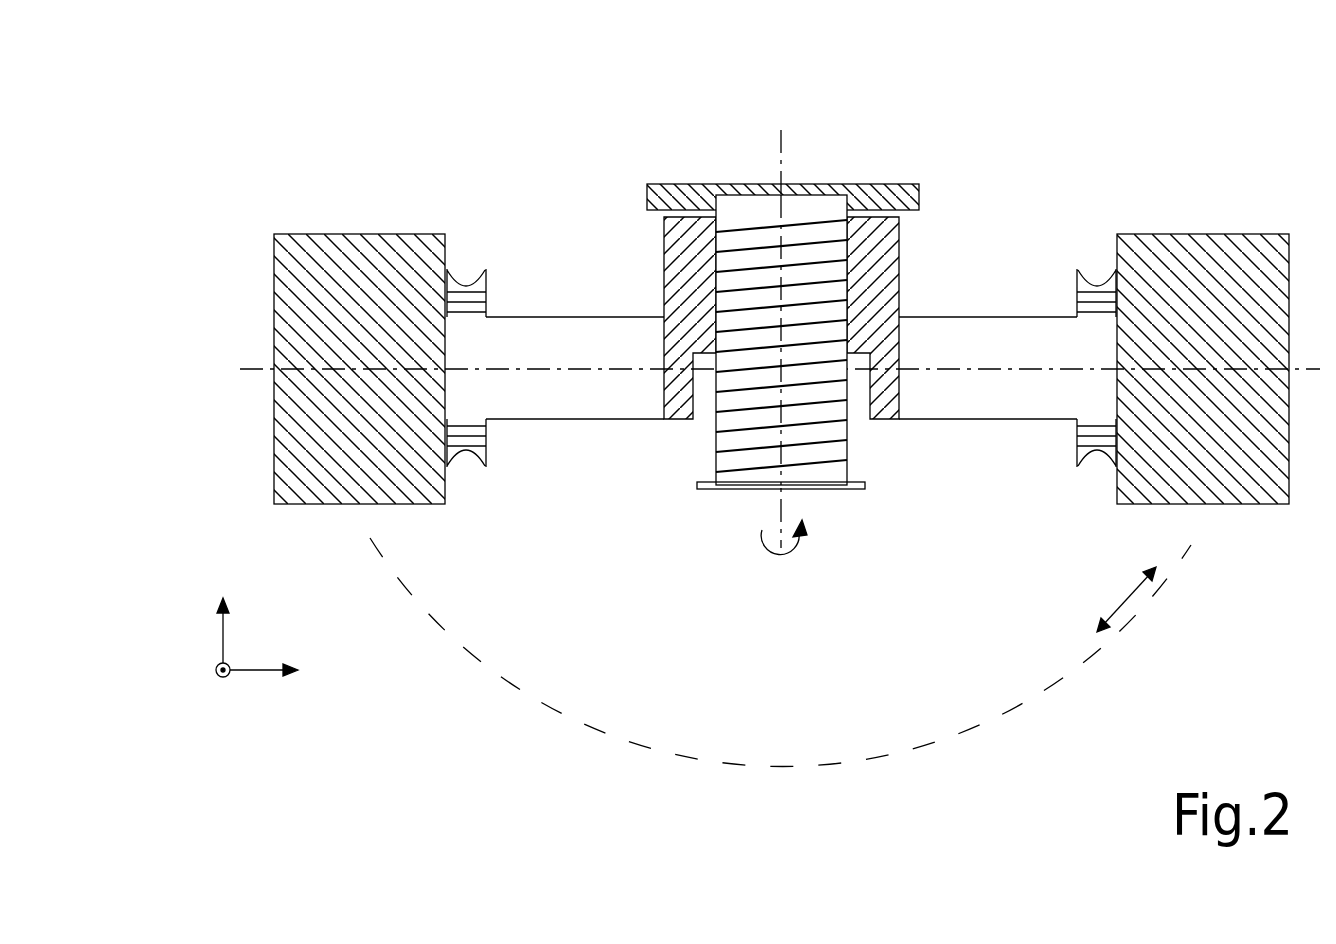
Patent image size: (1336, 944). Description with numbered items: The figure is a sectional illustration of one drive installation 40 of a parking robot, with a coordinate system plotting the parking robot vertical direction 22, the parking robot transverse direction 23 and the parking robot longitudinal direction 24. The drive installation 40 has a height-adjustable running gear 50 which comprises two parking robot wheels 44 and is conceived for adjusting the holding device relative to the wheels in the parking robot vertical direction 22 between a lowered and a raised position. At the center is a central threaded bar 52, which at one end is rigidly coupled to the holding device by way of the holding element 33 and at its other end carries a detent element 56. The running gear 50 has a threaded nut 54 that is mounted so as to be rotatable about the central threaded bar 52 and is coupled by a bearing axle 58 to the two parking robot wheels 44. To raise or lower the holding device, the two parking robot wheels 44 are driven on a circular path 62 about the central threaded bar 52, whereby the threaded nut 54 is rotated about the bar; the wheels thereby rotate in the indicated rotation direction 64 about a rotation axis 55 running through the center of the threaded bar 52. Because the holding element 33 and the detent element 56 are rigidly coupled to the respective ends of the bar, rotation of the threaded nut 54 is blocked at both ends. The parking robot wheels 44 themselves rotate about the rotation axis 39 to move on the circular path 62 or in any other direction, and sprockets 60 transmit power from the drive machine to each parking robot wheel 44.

The parking robot vertical direction 22 is at (222, 640).
The parking robot transverse direction 23 is at (215, 677).
The parking robot longitudinal direction 24 is at (258, 677).
The holding element 33 is at (873, 196).
The rotation axis 39 is at (1013, 369).
The drive installation 40 is at (626, 111).
The parking robot wheel 44 is at (366, 248).
The running gear 50 is at (591, 333).
The central threaded bar 52 is at (838, 413).
The threaded nut 54 is at (882, 300).
The rotation axis 55 is at (766, 520).
The detent element 56 is at (706, 483).
The bearing axle 58 is at (958, 402).
The sprocket 60 is at (466, 285).
The circular path 62 is at (1056, 690).
The rotation direction 64 is at (1132, 600).